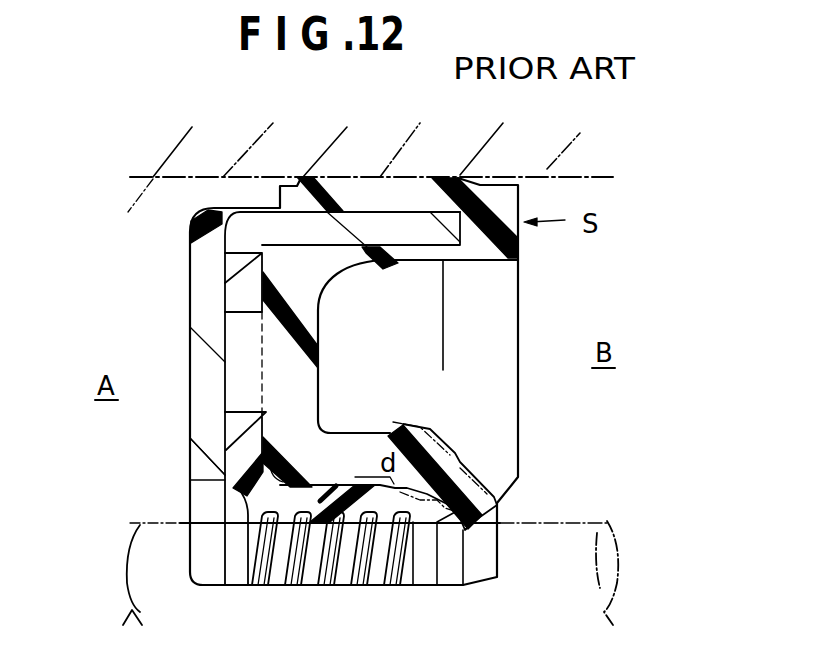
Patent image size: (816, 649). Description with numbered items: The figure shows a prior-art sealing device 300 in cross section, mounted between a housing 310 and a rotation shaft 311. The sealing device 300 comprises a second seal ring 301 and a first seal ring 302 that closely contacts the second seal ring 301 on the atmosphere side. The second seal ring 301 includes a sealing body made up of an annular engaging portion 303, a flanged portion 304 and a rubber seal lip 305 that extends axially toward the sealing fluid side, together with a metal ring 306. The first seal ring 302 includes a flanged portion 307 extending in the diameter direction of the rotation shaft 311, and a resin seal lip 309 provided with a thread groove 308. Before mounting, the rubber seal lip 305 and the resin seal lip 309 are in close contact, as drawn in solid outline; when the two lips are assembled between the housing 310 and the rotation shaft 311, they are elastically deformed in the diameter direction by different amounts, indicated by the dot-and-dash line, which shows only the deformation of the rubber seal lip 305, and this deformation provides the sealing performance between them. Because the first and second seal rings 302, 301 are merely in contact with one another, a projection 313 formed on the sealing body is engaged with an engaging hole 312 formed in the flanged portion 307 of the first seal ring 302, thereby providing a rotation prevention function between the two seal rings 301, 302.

The sealing device 300 is at (158, 358).
The second seal ring 301 is at (178, 259).
The first seal ring 302 is at (212, 454).
The annular engaging portion 303 is at (411, 262).
The flanged portion 304 is at (310, 378).
The rubber seal lip 305 is at (460, 460).
The metal ring 306 is at (378, 203).
The flanged portion 307 is at (225, 280).
The thread groove 308 is at (293, 567).
The resin seal lip 309 is at (283, 507).
The housing 310 is at (137, 210).
The rotation shaft 311 is at (563, 525).
The engaging hole 312 is at (235, 410).
The projection 313 is at (250, 393).